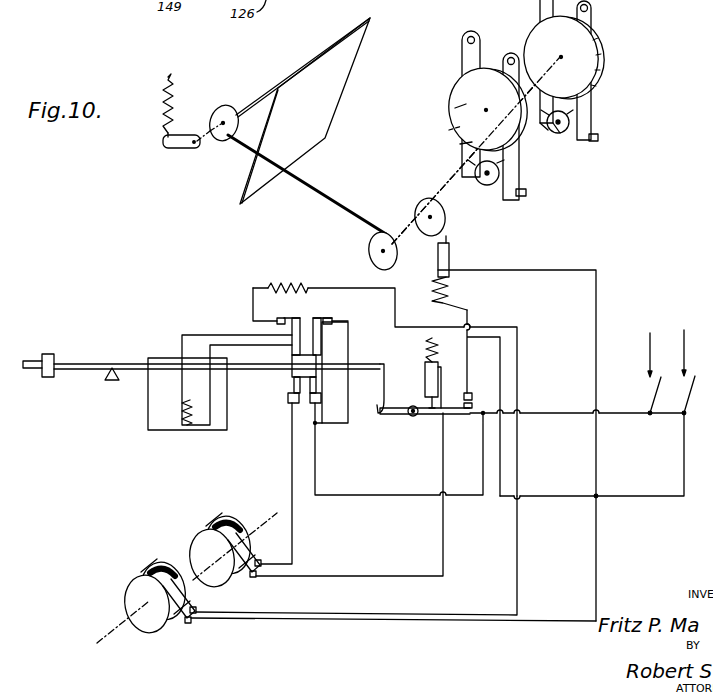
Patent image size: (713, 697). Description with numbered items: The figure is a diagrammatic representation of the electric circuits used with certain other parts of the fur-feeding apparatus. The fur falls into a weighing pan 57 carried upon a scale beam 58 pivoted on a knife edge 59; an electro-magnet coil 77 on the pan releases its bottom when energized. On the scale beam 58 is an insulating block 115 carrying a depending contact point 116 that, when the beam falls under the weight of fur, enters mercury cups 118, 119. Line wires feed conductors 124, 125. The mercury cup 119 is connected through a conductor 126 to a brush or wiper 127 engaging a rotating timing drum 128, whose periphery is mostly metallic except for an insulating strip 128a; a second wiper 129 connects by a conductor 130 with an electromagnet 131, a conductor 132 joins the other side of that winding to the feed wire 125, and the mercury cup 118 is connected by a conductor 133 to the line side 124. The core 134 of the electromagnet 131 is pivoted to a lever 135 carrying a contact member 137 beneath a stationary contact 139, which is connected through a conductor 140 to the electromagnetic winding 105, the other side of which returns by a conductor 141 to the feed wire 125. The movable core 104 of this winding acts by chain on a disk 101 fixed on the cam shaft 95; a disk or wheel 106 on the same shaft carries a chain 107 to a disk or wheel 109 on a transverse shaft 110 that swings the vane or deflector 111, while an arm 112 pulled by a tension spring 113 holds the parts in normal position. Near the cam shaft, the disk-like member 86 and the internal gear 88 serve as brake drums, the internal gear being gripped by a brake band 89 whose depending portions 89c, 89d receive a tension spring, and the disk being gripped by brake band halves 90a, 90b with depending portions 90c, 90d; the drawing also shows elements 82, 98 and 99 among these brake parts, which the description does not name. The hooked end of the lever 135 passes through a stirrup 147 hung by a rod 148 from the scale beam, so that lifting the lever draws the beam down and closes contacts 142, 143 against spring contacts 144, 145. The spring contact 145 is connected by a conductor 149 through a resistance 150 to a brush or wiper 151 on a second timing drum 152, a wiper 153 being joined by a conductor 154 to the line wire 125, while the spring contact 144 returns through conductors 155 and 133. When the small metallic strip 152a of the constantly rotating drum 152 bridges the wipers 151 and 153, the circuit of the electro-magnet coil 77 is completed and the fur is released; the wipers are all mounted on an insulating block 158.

The weighing pan 57 is at (150, 410).
The scale beam 58 is at (70, 361).
The knife edge 59 is at (104, 378).
The electro-magnet coil 77 is at (188, 425).
The optical axis 82 is at (449, 130).
The disk-like member 86 is at (597, 33).
The internal gear 88 is at (455, 108).
The brake band 89 is at (459, 99).
The depending portion 89c is at (460, 144).
The depending portion 89d is at (511, 172).
The brake band half 90a is at (528, 21).
The brake band half 90b is at (600, 55).
The depending portion 90c is at (546, 128).
The depending portion 90d is at (590, 108).
The cam shaft 95 is at (401, 232).
The gear 98 is at (479, 189).
The gear 99 is at (564, 134).
The disk 101 is at (424, 200).
The movable core 104 is at (450, 259).
The electromagnetic winding 105 is at (455, 293).
The disk or wheel 106 is at (368, 248).
The chain 107 is at (318, 197).
The disk or wheel 109 is at (232, 108).
The transverse shaft 110 is at (254, 97).
The vane or deflector 111 is at (343, 72).
The arm 112 is at (178, 149).
The tension spring 113 is at (172, 87).
The insulating block 115 is at (300, 373).
The contact point 116 is at (318, 404).
The mercury cup 118 is at (305, 395).
The mercury cup 119 is at (294, 404).
The conductor 124 is at (558, 415).
The conductor 125 is at (636, 498).
The conductor 126 is at (291, 483).
The brush or wiper 127 is at (258, 560).
The timing drum 128 is at (196, 543).
The insulating strip 128a is at (233, 530).
The brush or wiper 129 is at (253, 578).
The conductor 130 is at (443, 458).
The electromagnet 131 is at (436, 344).
The conductor 132 is at (518, 478).
The conductor 133 is at (316, 480).
The core 134 is at (425, 365).
The lever 135 is at (408, 416).
The contact member 137 is at (467, 418).
The stationary contact 139 is at (473, 396).
The conductor 140 is at (469, 352).
The conductor 141 is at (597, 312).
The contact 142 is at (320, 316).
The contact 143 is at (252, 289).
The spring contact 144 is at (331, 318).
The spring contact 145 is at (262, 312).
The stirrup 147 is at (378, 414).
The rod 148 is at (384, 398).
The conductor 149 is at (514, 326).
The resistance 150 is at (289, 283).
The brush or wiper 151 is at (200, 612).
The timing drum 152 is at (130, 598).
The metallic strip 152a is at (160, 572).
The wiper 153 is at (187, 625).
The conductor 154 is at (400, 622).
The conductor 155 is at (350, 346).
The insulating block 158 is at (273, 371).